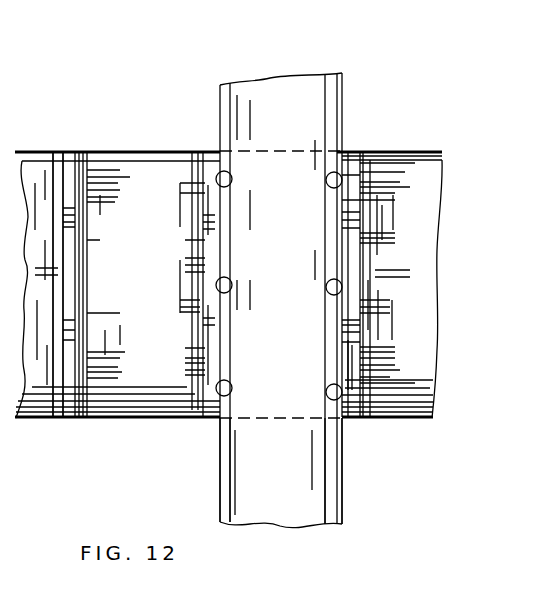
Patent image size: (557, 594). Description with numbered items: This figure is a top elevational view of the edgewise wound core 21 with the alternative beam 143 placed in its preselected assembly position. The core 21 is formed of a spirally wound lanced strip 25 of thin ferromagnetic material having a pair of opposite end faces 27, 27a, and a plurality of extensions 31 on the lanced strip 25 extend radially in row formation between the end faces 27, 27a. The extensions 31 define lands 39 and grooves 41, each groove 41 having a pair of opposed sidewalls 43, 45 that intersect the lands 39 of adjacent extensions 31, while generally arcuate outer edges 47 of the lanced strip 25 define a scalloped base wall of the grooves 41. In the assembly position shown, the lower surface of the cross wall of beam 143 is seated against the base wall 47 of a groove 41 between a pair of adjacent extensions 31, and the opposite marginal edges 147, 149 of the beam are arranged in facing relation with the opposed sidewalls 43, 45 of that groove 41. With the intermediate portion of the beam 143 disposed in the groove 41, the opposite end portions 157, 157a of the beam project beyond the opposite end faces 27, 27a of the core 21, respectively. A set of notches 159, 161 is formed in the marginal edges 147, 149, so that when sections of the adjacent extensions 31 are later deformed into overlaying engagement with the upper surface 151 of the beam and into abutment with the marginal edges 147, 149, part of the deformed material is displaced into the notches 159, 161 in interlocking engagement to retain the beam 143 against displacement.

The edgewise wound core 21 is at (402, 141).
The lanced strip 25 is at (428, 241).
The end face 27 is at (428, 419).
The end face 27a is at (423, 151).
The extensions 31 is at (52, 403).
The lands 39 is at (63, 160).
The grooves 41 is at (382, 151).
The sidewall 43 is at (88, 161).
The sidewall 45 is at (200, 175).
The arcuate outer edge 47 is at (428, 341).
The beam 143 is at (220, 502).
The marginal edge 147 is at (220, 474).
The marginal edge 149 is at (342, 480).
The upper surface 151 is at (320, 497).
The end portion 157 is at (281, 512).
The end portion 157a is at (290, 88).
The notches 159 is at (233, 180).
The notches 161 is at (328, 187).